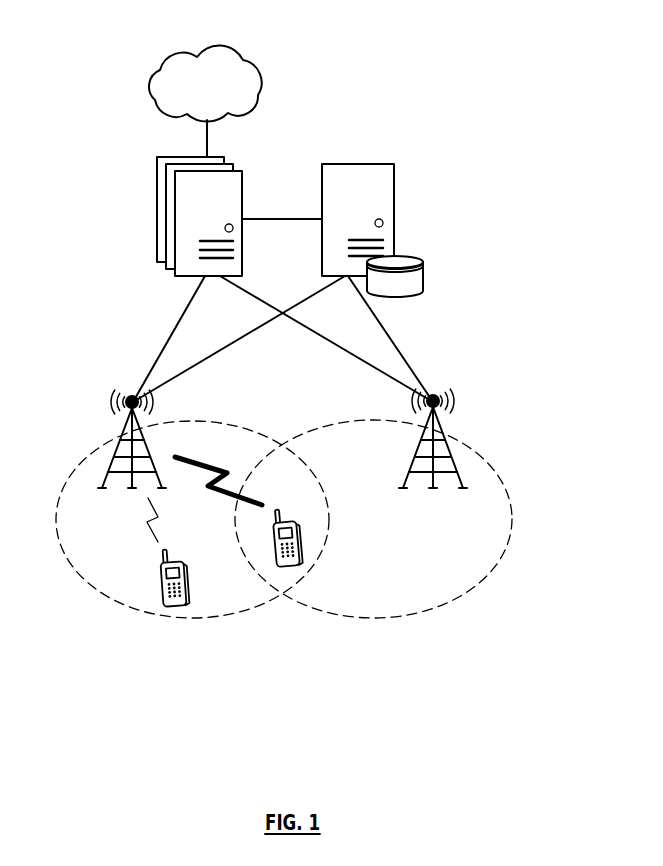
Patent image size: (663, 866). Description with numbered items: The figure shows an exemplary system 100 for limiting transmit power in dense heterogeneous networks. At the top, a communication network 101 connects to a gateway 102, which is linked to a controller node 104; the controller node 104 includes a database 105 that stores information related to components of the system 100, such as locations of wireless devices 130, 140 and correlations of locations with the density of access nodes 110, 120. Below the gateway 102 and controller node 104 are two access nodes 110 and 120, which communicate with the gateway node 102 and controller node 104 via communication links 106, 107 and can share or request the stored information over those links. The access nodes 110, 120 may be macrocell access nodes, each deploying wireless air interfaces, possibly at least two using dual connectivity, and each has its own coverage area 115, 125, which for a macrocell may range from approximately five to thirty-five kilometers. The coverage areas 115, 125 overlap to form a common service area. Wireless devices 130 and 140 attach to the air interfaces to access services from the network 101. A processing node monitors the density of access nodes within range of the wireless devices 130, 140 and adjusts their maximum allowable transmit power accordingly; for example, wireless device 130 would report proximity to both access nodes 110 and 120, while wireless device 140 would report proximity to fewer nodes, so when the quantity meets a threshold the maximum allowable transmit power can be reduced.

The system 100 is at (342, 54).
The communication network 101 is at (223, 92).
The gateway node 102 is at (157, 190).
The controller node 104 is at (394, 203).
The database 105 is at (423, 278).
The communication link 106 is at (263, 303).
The communication link 107 is at (232, 342).
The access node 110 is at (113, 463).
The coverage area 115 is at (121, 605).
The access node 120 is at (455, 463).
The coverage area 125 is at (447, 607).
The wireless device 130 is at (297, 563).
The wireless device 140 is at (183, 605).